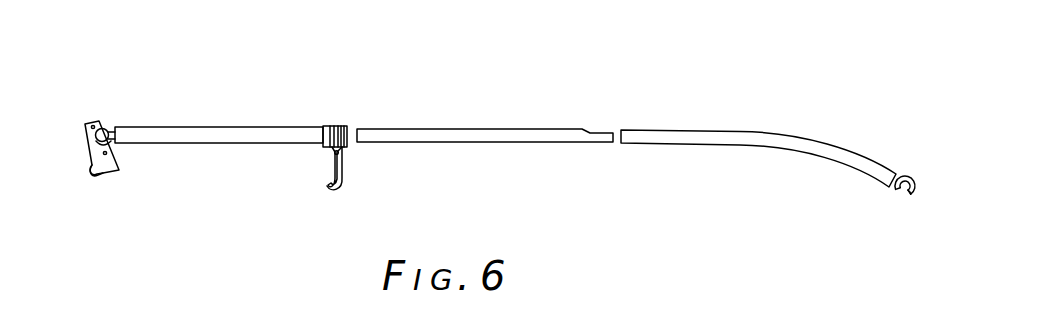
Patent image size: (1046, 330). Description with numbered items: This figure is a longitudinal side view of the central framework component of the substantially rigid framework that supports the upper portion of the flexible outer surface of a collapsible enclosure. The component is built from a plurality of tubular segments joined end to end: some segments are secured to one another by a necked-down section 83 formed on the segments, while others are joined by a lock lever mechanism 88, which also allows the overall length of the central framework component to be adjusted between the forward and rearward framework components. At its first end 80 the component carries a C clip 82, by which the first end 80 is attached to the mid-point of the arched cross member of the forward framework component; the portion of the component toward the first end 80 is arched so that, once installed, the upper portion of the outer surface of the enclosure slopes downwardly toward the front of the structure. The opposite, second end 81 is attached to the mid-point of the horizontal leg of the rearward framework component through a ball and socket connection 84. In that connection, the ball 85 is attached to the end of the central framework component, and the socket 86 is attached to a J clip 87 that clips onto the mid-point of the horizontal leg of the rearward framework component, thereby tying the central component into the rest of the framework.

The first end 80 is at (905, 160).
The second end 81 is at (122, 135).
The C clip 82 is at (915, 193).
The necked-down section 83 is at (592, 133).
The ball and socket connection 84 is at (124, 148).
The ball 85 is at (112, 126).
The socket 86 is at (92, 143).
The J clip 87 is at (108, 172).
The lock lever mechanism 88 is at (337, 127).